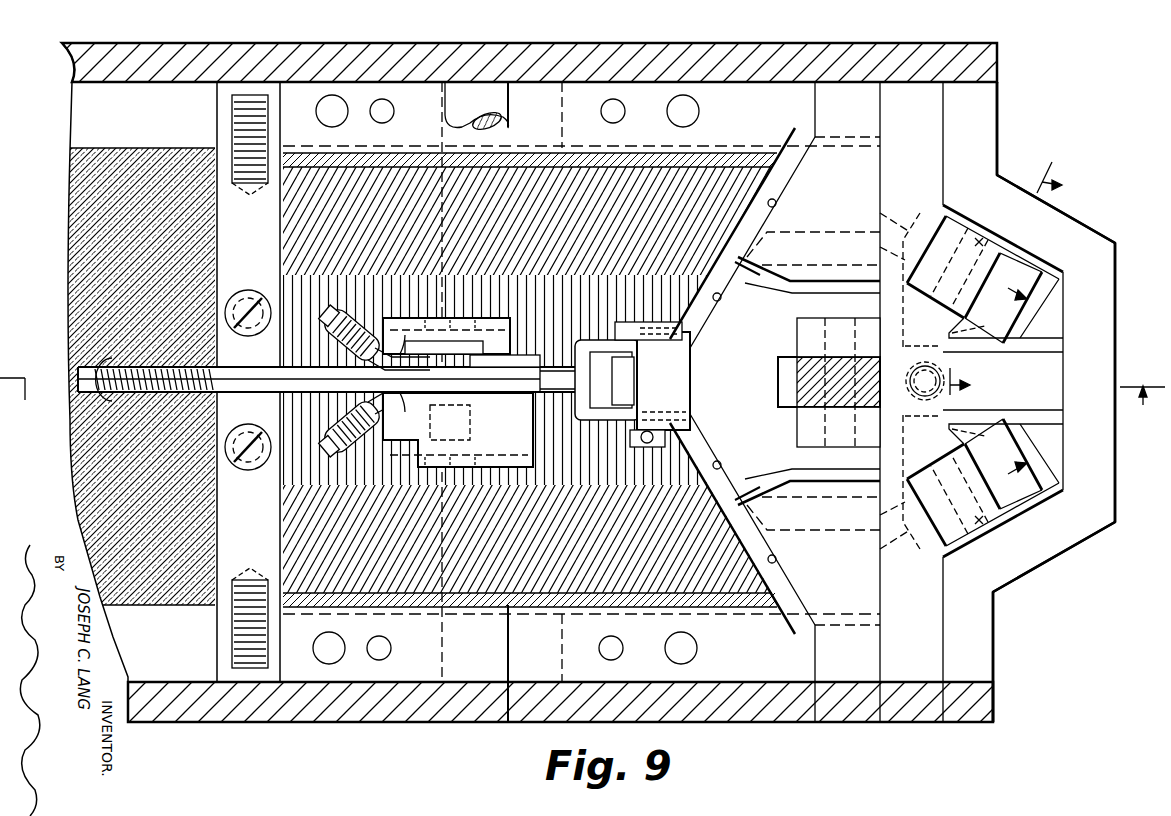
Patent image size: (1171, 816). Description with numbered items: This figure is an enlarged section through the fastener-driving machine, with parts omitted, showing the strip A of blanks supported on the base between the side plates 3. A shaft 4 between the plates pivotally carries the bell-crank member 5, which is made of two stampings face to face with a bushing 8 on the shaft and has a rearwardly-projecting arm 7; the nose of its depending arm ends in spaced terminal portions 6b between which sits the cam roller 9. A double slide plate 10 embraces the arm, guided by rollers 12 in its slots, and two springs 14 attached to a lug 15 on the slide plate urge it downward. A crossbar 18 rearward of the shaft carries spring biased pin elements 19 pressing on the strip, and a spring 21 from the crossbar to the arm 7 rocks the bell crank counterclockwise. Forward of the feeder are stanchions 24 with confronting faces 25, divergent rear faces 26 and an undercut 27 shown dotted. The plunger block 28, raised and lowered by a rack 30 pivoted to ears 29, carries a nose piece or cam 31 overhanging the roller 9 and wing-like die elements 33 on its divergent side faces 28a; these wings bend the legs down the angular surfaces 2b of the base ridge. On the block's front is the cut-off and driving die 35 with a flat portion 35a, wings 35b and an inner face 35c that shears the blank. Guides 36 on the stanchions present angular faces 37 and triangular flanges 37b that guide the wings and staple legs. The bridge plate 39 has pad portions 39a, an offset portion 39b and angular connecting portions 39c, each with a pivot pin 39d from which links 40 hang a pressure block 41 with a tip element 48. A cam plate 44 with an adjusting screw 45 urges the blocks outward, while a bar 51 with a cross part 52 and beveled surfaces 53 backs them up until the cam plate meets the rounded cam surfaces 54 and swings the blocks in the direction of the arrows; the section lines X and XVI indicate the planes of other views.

The strip A is at (82, 297).
The angular surfaces 2b is at (766, 282).
The side plates 3 is at (530, 86).
The shaft 4 is at (445, 97).
The bell-crank member 5 is at (510, 392).
The spaced terminal portions 6b is at (620, 348).
The rearwardly-projecting arm 7 is at (295, 392).
The bushing 8 is at (517, 362).
The cam roller 9 is at (622, 381).
The slide plate 10 is at (401, 381).
The rollers 12 is at (418, 348).
The springs 14 is at (345, 348).
The lug 15 is at (330, 322).
The crossbar 18 is at (258, 236).
The spring biased pin elements 19 is at (245, 292).
The spring 21 is at (98, 362).
The uprights or stanchions 24 is at (866, 176).
The parallel confronting faces 25 is at (812, 287).
The outwardly divergent rear faces 26 is at (776, 205).
The undercut 27 is at (805, 238).
The block 28 is at (782, 356).
The divergent side faces 28a is at (772, 306).
The ears 29 is at (805, 330).
The rack 30 is at (778, 378).
The nose piece or cam 31 is at (675, 386).
The wing-like die elements 33 is at (790, 166).
The cut-off and driving die 35 is at (908, 337).
The flat portion 35a is at (985, 405).
The angularly projecting wing 35b is at (955, 275).
The inner face 35c is at (875, 463).
The guide 36 is at (930, 152).
The angular faces 37 is at (912, 244).
The triangular flanges 37b is at (884, 249).
The bridge plate 39 is at (1102, 361).
The pad portions 39a is at (1040, 119).
The intermediate offset portion 39b is at (1158, 375).
The angular connecting portions 39c is at (1113, 221).
The horizontal pivot pin 39d is at (975, 222).
The links 40 is at (1003, 381).
The pressure block 41 is at (1030, 262).
The cam plate 44 is at (934, 359).
The screw 45 is at (950, 340).
The offset tip elements 48 is at (884, 305).
The bar 51 is at (1040, 392).
The cross part 52 is at (1058, 338).
The beveled surfaces 53 is at (1040, 314).
The rounded cam surfaces 54 is at (979, 381).
The section line X is at (582, 402).
The section line XVI is at (1090, 194).